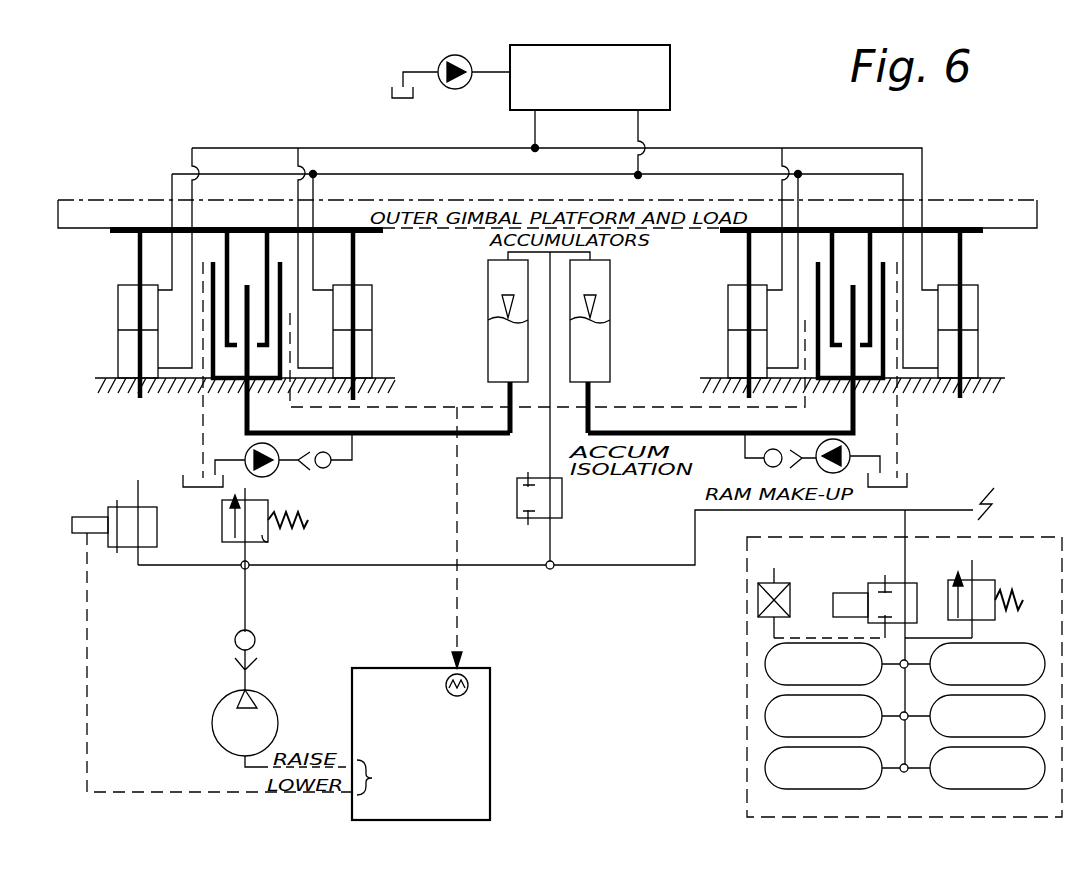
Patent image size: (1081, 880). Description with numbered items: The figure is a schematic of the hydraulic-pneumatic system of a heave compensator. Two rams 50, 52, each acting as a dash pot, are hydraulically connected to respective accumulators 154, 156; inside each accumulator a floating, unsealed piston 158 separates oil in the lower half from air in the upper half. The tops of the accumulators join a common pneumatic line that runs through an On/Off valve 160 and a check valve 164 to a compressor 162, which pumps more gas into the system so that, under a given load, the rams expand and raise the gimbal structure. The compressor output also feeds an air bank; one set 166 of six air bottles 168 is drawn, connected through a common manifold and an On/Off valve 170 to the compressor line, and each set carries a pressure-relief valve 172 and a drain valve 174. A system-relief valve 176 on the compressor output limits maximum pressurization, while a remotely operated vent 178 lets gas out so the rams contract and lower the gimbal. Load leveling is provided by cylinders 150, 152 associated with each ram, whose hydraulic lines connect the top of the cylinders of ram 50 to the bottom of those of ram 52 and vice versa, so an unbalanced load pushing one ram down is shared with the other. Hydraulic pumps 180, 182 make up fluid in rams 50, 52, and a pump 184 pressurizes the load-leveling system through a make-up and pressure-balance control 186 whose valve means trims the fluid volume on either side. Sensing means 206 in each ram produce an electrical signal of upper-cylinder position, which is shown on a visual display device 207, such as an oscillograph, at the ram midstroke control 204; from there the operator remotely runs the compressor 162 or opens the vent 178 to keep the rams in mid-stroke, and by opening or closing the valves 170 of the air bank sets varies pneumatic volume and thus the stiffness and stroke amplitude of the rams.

The ram 50 is at (885, 372).
The ram 52 is at (213, 365).
The cylinder 150 is at (372, 308).
The cylinder 152 is at (118, 318).
The accumulator 154 is at (610, 290).
The accumulator 156 is at (488, 320).
The floating unsealed piston 158 is at (610, 328).
The On/Off valve 160 is at (562, 518).
The compressor 162 is at (260, 690).
The check valve 164 is at (255, 640).
The set of air bottles 166 is at (742, 587).
The tanks 168 is at (773, 658).
The On/Off valve 170 is at (915, 583).
The pressure-relief valve 172 is at (995, 580).
The drain valve 174 is at (790, 583).
The system-relief valve 176 is at (262, 540).
The remotely operated vent 178 is at (157, 527).
The hydraulic pump 180 is at (840, 440).
The hydraulic pump 182 is at (268, 477).
The pump 184 is at (450, 89).
The make-up and pressure-balance control 186 is at (670, 100).
The ram midstroke control 204 is at (490, 695).
The sensing means 206 is at (258, 303).
The visual display device 207 is at (450, 676).